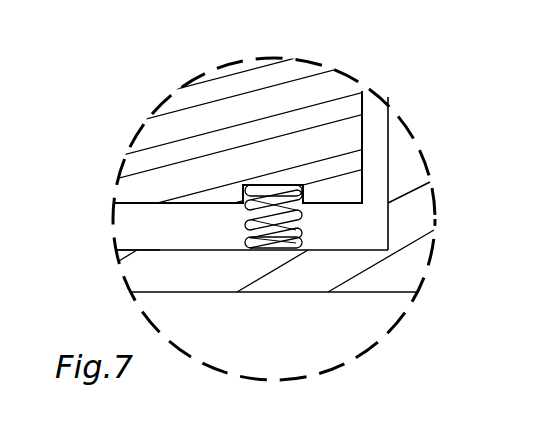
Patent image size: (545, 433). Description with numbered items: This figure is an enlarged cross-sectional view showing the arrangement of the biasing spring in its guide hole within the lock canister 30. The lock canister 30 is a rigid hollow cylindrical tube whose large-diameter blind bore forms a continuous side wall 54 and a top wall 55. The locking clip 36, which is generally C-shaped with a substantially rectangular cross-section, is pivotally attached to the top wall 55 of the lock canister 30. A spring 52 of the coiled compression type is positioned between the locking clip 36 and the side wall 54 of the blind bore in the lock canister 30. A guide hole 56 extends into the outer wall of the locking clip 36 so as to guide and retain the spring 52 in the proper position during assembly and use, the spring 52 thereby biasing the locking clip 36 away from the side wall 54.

The lock canister 30 is at (412, 267).
The locking clip 36 is at (329, 83).
The spring 52 is at (262, 246).
The side wall 54 is at (150, 250).
The top wall 55 is at (390, 132).
The guide hole 56 is at (302, 197).